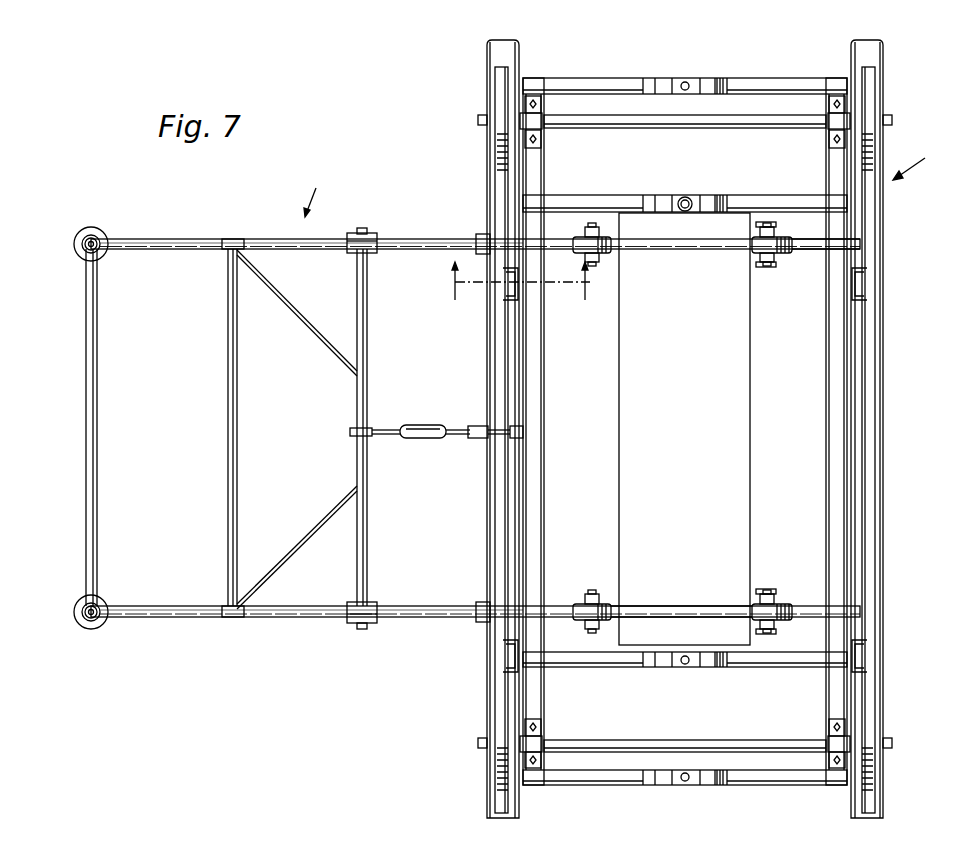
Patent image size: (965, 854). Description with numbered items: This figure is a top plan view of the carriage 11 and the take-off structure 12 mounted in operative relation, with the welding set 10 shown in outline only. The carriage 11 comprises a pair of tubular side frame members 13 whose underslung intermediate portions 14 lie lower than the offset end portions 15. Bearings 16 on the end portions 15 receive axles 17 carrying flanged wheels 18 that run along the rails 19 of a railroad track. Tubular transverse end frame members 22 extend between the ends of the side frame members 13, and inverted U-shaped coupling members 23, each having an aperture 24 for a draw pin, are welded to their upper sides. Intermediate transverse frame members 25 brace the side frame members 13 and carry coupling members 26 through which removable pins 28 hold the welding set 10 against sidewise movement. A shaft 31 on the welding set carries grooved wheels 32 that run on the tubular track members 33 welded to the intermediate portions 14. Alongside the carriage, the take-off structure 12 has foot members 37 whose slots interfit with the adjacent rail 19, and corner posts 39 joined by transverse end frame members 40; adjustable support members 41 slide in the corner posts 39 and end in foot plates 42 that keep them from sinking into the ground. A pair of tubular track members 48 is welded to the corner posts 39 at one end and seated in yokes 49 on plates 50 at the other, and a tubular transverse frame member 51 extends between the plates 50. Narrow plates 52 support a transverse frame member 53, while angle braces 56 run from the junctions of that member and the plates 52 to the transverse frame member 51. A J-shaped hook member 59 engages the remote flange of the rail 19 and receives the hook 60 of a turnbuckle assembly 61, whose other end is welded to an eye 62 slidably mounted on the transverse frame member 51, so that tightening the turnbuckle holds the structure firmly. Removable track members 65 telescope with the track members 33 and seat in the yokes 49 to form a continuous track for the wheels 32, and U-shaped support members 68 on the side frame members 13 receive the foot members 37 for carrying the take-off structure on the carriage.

The welding set 10 is at (522, 281).
The carriage 11 is at (919, 158).
The take-off structure 12 is at (315, 193).
The side frame members 13 is at (545, 290).
The intermediate portions 14 is at (619, 388).
The end portions 15 is at (542, 145).
The bearings 16 is at (542, 128).
The axles 17 is at (642, 128).
The flanged wheels 18 is at (500, 88).
The rails 19 is at (496, 57).
The transverse end frame members 22 is at (598, 78).
The coupling members 23 is at (680, 78).
The aperture 24 is at (690, 82).
The intermediate transverse frame members 25 is at (598, 195).
The coupling members 26 is at (662, 197).
The pins 28 is at (690, 200).
The shaft 31 is at (766, 268).
The wheels 32 is at (482, 234).
The track members 33 is at (798, 249).
The foot members 37 is at (482, 602).
The corner posts 39 is at (91, 235).
The transverse end frame members 40 is at (86, 393).
The adjustable support members 41 is at (85, 244).
The foot plates 42 is at (104, 256).
The track members 48 is at (180, 239).
The yokes 49 is at (370, 230).
The plates 50 is at (355, 233).
The transverse frame member 51 is at (367, 465).
The plates 52 is at (233, 239).
The transverse frame member 53 is at (228, 477).
The angle braces 56 is at (300, 318).
The hook member 59 is at (514, 426).
The hook 60 is at (474, 438).
The turnbuckle assembly 61 is at (422, 425).
The eye 62 is at (378, 428).
The removable track members 65 is at (422, 249).
The support members 68 is at (503, 286).